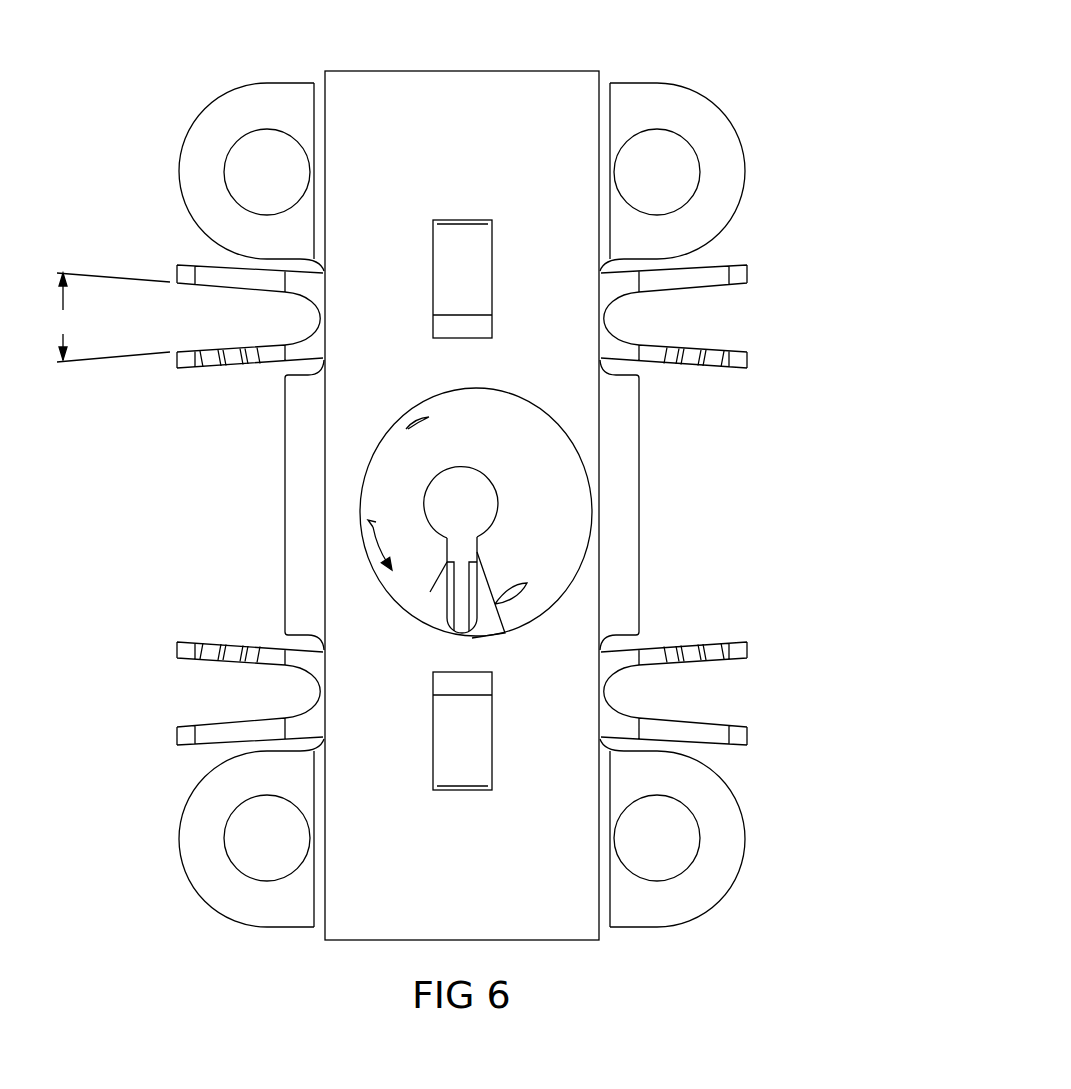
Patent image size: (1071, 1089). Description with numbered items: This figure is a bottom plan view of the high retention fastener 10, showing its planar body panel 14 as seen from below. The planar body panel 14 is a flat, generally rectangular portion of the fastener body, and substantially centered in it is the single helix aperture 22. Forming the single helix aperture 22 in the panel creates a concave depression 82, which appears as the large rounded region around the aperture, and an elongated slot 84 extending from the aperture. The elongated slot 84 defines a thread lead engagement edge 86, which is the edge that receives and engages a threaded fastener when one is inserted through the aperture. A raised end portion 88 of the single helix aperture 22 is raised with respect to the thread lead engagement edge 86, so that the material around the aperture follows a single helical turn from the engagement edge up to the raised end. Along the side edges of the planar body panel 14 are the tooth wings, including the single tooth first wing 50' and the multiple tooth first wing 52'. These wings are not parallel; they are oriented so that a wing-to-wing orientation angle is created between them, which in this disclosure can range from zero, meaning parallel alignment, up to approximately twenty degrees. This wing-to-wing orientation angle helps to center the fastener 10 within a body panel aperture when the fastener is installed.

The high retention fastener 10 is at (747, 82).
The planar body panel 14 is at (456, 87).
The single helix aperture 22 is at (423, 503).
The single tooth first wing 50' is at (217, 264).
The multiple tooth first wing 52' is at (220, 379).
The concave depression 82 is at (378, 440).
The elongated slot 84 is at (463, 592).
The thread lead engagement edge 86 is at (447, 572).
The raised end portion 88 is at (477, 543).